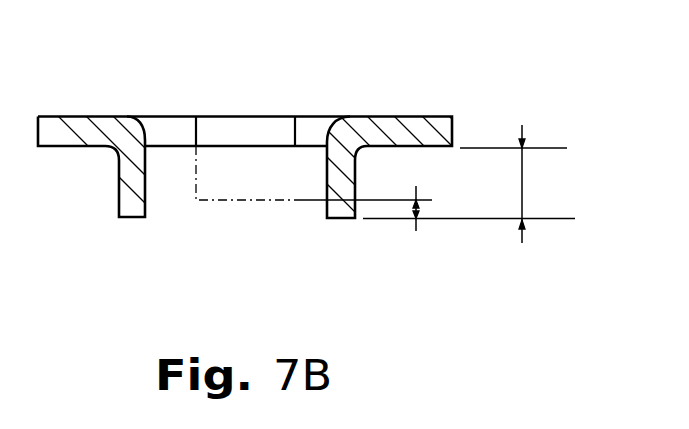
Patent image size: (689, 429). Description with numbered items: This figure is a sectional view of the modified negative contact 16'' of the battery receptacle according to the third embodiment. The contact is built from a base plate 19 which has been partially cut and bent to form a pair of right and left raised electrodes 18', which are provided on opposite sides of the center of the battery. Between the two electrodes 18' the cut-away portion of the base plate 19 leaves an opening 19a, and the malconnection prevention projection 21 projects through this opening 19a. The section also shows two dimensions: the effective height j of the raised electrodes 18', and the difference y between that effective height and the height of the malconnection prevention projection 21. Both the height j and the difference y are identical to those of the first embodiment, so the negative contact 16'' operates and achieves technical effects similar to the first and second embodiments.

The negative contact 16'' is at (291, 140).
The base plate 19 is at (70, 127).
The opening 19a is at (158, 133).
The raised electrode 18' is at (245, 210).
The malconnection prevention projection 21 is at (218, 200).
The difference y is at (418, 212).
The effective height j is at (526, 190).